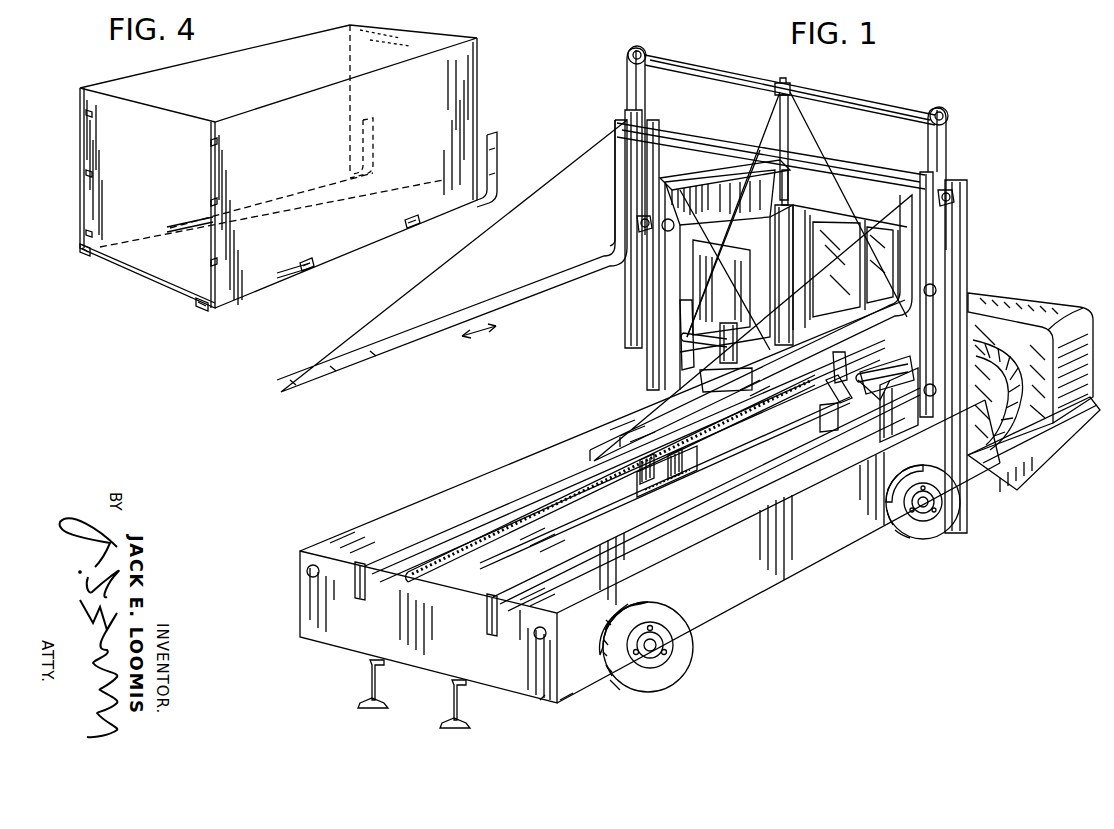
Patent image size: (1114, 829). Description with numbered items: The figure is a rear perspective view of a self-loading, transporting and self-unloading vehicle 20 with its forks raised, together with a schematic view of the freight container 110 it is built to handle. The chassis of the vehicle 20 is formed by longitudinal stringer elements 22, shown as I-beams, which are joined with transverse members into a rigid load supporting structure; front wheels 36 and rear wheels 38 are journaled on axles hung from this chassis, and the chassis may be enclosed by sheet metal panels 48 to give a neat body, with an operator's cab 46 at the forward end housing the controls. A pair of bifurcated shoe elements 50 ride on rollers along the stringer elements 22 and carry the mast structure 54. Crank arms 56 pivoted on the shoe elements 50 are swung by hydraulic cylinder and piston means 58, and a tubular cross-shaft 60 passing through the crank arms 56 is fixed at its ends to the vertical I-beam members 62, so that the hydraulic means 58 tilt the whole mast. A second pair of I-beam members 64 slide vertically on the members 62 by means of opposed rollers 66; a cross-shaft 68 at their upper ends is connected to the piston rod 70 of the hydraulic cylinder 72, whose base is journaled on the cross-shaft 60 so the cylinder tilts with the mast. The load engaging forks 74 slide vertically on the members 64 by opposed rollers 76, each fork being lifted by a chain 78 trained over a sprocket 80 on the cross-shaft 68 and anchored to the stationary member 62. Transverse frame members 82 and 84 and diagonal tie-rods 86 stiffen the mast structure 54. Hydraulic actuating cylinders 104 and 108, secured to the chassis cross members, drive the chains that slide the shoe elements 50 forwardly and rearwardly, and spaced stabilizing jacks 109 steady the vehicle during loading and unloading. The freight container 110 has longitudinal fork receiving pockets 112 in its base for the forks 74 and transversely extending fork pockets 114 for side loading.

In FIG. 1, the vehicle 20 is at (797, 586).
In FIG. 1, the longitudinal stringer elements 22 is at (466, 545).
In FIG. 1, the front wheels 36 is at (922, 540).
In FIG. 1, the rear wheels 38 is at (684, 670).
In FIG. 1, the operator's cab 46 is at (838, 253).
In FIG. 1, the sheet metal panels 48 is at (575, 692).
In FIG. 1, the bifurcated shoe elements 50 is at (705, 392).
In FIG. 1, the mast structure 54 is at (845, 86).
In FIG. 1, the crank arms 56 is at (860, 402).
In FIG. 1, the hydraulic cylinder and piston means 58 is at (663, 378).
In FIG. 1, the tubular cross-shaft 60 is at (898, 388).
In FIG. 1, the I-beam members 62 is at (650, 357).
In FIG. 1, the second I-beam members 64 is at (626, 316).
In FIG. 1, the rollers 66 is at (673, 230).
In FIG. 1, the cross-shaft 68 is at (852, 112).
In FIG. 1, the piston rod 70 is at (773, 104).
In FIG. 1, the hydraulic cylinder 72 is at (790, 292).
In FIG. 4, the load engaging forks 74 is at (498, 155).
In FIG. 1, the load engaging forks 74 is at (525, 300).
In FIG. 1, the rollers 76 is at (637, 222).
In FIG. 1, the chains 78 is at (626, 80).
In FIG. 1, the sprocket 80 is at (648, 50).
In FIG. 1, the transverse frame member 82 is at (700, 132).
In FIG. 1, the transverse frame member 84 is at (665, 177).
In FIG. 1, the diagonal tie-rods 86 is at (697, 288).
In FIG. 1, the hydraulic actuating cylinder 104 is at (731, 452).
In FIG. 1, the hydraulic actuating cylinder 108 is at (500, 535).
In FIG. 1, the stabilizing jacks 109 is at (455, 705).
In FIG. 4, the freight container 110 is at (272, 36).
In FIG. 4, the fork receiving pockets 112 is at (84, 262).
In FIG. 4, the transversely extending fork pockets 114 is at (312, 268).